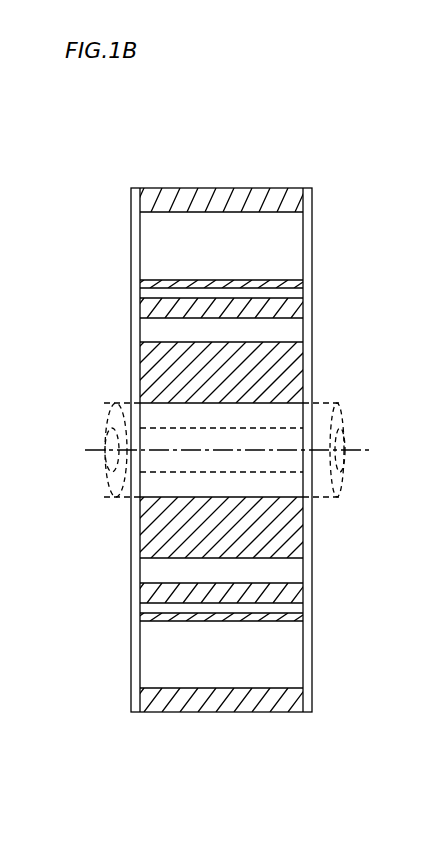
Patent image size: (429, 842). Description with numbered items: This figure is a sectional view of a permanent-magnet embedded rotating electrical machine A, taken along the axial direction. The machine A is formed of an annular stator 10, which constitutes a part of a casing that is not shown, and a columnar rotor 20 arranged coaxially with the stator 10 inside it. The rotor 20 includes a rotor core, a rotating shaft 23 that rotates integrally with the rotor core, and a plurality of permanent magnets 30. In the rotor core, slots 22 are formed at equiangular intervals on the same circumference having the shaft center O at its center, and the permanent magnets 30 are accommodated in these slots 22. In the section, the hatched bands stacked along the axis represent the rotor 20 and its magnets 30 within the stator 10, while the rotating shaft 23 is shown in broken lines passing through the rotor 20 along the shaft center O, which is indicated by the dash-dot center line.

The permanent-magnet embedded rotating electrical machine A is at (131, 190).
The annular stator 10 is at (310, 710).
The columnar rotor 20 is at (232, 450).
The slots 22 is at (293, 320).
The rotating shaft 23 is at (342, 405).
The permanent magnets 30 is at (152, 328).
The shaft center O is at (116, 492).